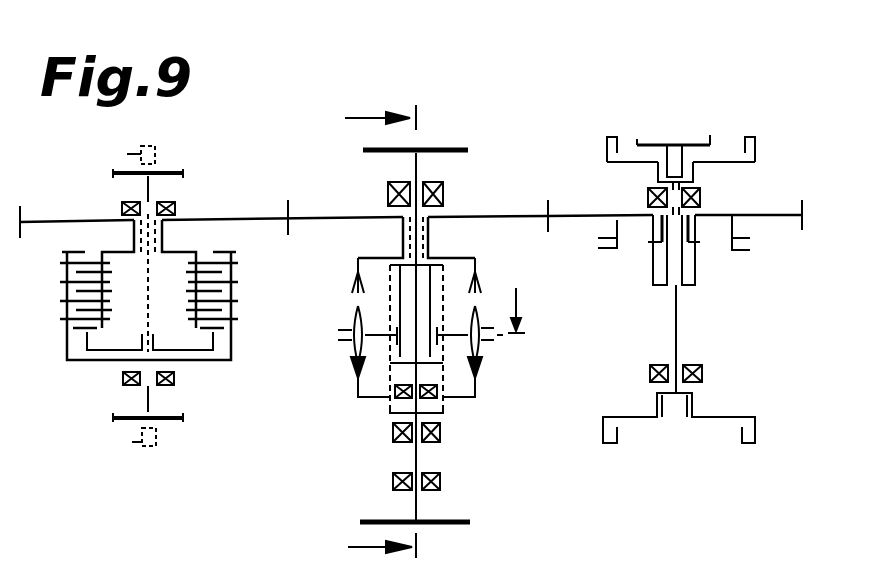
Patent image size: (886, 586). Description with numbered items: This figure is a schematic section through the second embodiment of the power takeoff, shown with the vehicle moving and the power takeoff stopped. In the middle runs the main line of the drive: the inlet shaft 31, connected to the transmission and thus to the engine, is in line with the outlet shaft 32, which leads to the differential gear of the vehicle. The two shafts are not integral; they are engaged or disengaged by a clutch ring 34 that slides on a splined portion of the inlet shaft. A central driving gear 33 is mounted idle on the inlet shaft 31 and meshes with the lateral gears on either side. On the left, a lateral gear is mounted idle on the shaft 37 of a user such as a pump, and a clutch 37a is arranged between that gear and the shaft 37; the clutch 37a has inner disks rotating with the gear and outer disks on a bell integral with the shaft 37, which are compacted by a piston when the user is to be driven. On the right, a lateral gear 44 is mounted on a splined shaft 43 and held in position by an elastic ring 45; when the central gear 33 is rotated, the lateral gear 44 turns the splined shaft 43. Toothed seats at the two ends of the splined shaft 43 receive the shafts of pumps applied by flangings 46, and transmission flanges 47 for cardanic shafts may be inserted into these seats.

The inlet shaft 31 is at (463, 147).
The outlet shaft 32 is at (372, 520).
The central driving gear 33 is at (353, 216).
The clutch ring 34 is at (352, 328).
The shaft of a user 37 is at (180, 172).
The clutch 37a is at (44, 300).
The splined shaft 43 is at (677, 315).
The lateral gear 44 is at (626, 214).
The elastic ring 45 is at (700, 242).
The flangings 46 is at (752, 151).
The transmission flanges 47 is at (710, 137).